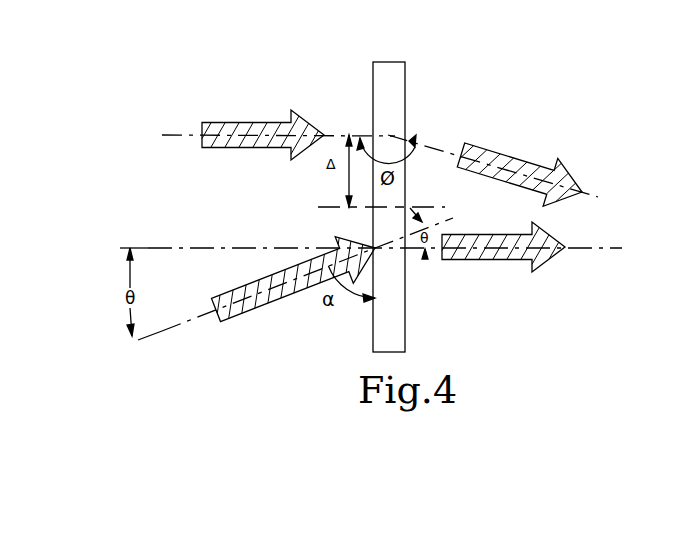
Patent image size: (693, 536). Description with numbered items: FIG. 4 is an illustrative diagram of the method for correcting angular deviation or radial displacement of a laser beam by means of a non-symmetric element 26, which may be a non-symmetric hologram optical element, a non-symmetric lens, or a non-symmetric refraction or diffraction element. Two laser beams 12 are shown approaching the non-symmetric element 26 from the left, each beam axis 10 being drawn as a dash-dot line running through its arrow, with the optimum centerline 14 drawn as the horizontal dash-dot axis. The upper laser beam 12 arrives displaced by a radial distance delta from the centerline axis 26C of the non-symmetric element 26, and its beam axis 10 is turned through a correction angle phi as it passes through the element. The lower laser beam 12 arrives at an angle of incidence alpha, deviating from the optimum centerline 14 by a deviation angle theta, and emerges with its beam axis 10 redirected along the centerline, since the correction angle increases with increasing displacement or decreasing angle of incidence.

The beam axis 10 is at (178, 134).
The laser beam 12 is at (262, 124).
The optimum centerline 14 is at (186, 248).
The non-symmetric element 26 is at (384, 62).
The centerline axis 26C is at (333, 207).